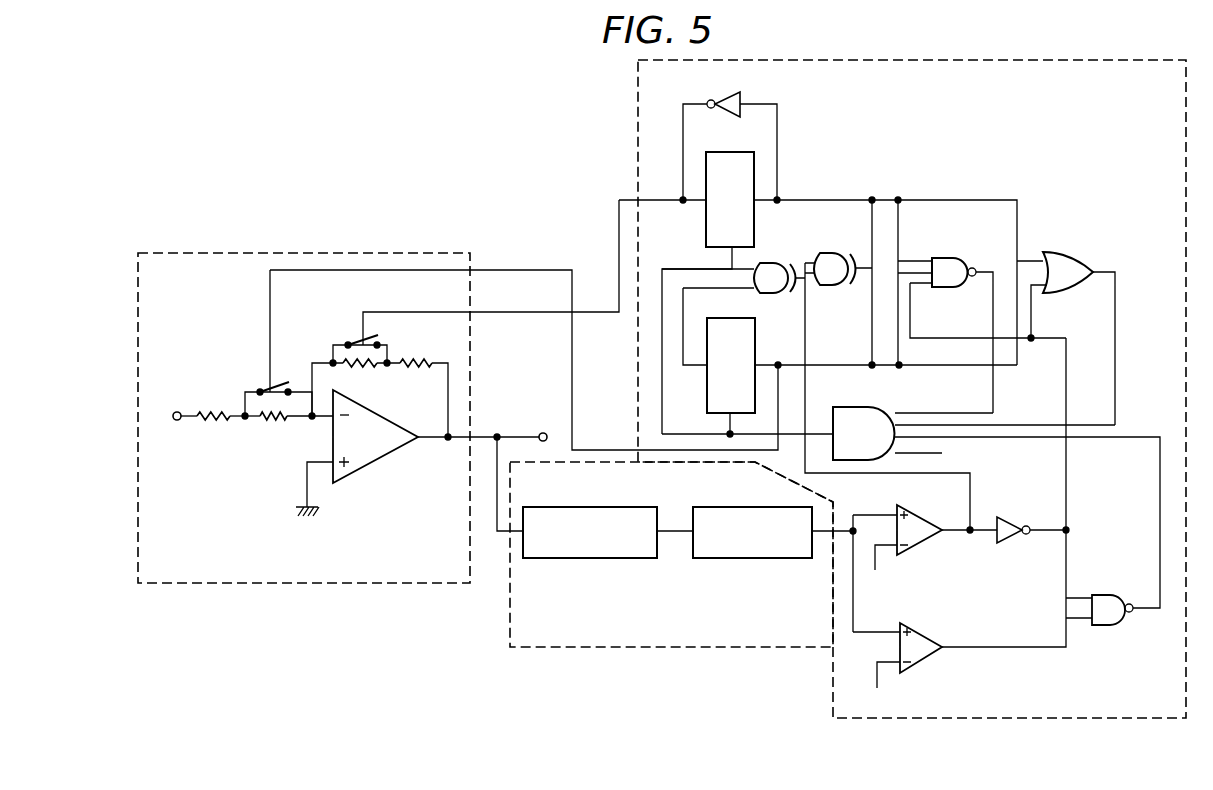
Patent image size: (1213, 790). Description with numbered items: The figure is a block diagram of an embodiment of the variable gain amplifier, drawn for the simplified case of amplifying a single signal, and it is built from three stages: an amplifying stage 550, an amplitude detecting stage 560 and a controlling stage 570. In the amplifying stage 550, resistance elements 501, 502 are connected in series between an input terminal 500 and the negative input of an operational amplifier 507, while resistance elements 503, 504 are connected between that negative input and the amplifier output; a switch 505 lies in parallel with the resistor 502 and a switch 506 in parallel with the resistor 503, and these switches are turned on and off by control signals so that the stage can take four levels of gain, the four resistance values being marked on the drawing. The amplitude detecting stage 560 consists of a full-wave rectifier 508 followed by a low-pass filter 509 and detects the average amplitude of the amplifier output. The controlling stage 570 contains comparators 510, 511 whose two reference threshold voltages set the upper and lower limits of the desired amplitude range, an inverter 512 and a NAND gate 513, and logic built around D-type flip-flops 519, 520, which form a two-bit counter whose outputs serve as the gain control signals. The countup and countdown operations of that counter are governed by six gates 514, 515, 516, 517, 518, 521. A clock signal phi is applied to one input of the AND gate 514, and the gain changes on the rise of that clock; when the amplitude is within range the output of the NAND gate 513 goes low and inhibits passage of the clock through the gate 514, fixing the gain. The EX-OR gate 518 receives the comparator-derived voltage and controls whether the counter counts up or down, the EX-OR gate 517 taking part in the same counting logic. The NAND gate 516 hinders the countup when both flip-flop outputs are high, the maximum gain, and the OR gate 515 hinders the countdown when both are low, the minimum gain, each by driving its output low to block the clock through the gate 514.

The input terminal 500 is at (171, 431).
The resistance element 501 is at (215, 408).
The resistance element 502 is at (262, 424).
The resistance element 503 is at (377, 373).
The resistance element 504 is at (420, 354).
The switch 505 is at (287, 372).
The switch 506 is at (378, 338).
The operational amplifier 507 is at (393, 460).
The full-wave rectifier 508 is at (590, 558).
The low-pass filter 509 is at (750, 558).
The comparator 510 is at (930, 540).
The comparator 511 is at (922, 630).
The inverter 512 is at (1015, 538).
The NAND gate 513 is at (1108, 628).
The AND gate 514 is at (860, 407).
The OR gate 515 is at (1063, 252).
The NAND gate 516 is at (945, 258).
The EX-OR gate 517 is at (838, 253).
The EX-OR gate 518 is at (770, 263).
The D-type flip-flop 519 is at (705, 377).
The D-type flip-flop 520 is at (713, 151).
The gate 521 is at (743, 93).
The amplifying stage 550 is at (340, 253).
The amplitude detecting stage 560 is at (685, 648).
The controlling stage 570 is at (1045, 718).